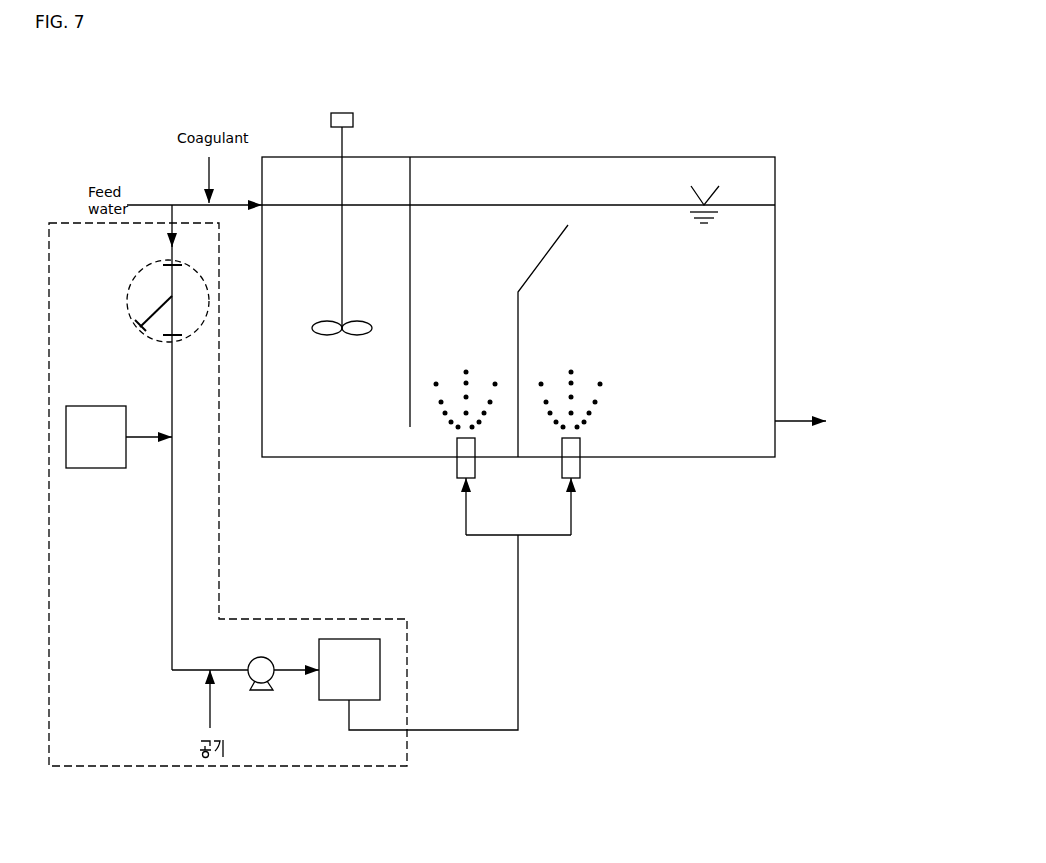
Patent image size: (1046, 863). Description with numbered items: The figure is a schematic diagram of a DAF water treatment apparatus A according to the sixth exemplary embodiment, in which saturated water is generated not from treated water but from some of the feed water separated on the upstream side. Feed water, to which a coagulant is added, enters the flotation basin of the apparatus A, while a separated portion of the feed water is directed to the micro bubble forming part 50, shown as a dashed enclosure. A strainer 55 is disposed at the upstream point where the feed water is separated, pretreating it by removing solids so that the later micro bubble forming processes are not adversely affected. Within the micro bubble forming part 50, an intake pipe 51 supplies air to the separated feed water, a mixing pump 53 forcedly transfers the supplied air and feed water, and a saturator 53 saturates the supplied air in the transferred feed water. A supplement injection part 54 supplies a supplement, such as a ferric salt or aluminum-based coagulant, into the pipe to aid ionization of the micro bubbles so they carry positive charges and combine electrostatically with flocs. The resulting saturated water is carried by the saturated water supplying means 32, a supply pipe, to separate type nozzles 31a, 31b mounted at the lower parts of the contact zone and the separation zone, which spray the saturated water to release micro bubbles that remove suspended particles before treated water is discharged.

The DAF water treatment apparatus A is at (749, 102).
The micro bubble forming part 50 is at (283, 767).
The intake pipe 51 is at (200, 703).
The mixing pump and saturator 53 is at (258, 657).
The supplement injection part 54 is at (108, 447).
The strainer 55 is at (138, 272).
The separate type nozzle 31a is at (457, 468).
The separate type nozzle 31b is at (562, 468).
The saturated water supplying means 32 is at (518, 562).